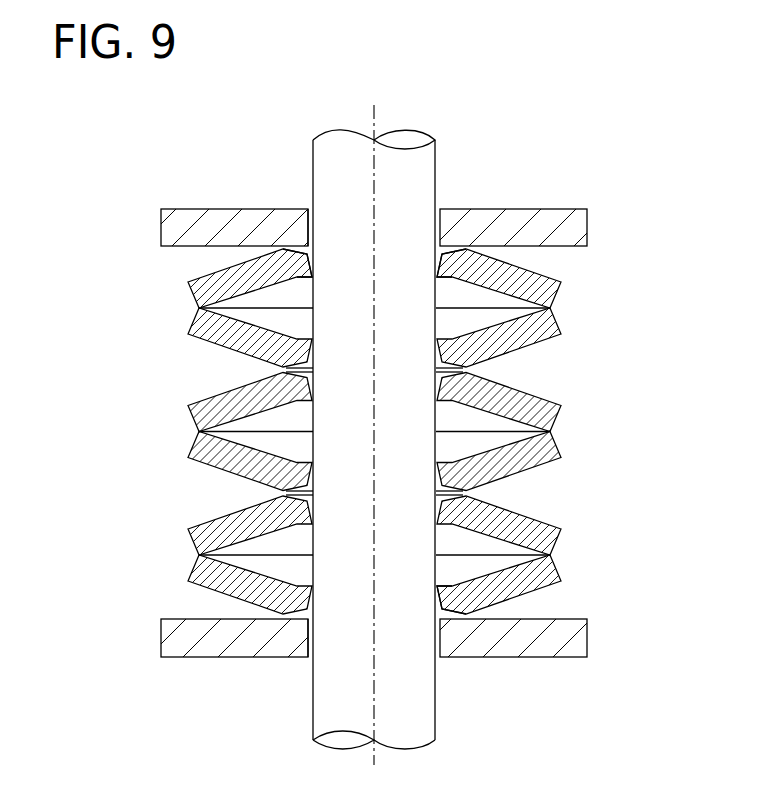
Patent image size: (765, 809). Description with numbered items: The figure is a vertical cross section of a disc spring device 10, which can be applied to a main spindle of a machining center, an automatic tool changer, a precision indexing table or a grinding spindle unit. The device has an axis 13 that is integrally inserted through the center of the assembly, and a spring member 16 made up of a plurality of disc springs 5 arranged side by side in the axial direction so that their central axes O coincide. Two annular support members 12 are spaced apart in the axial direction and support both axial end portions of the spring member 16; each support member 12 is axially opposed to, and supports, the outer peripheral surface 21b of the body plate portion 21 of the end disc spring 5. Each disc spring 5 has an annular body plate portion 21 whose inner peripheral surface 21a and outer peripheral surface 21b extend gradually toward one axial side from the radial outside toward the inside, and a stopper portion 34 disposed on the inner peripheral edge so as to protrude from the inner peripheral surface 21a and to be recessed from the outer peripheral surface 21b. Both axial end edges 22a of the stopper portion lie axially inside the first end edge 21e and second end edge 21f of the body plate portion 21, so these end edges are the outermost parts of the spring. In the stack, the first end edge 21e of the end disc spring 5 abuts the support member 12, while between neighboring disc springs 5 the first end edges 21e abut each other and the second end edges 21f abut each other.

The disc spring 5 is at (379, 380).
The disc spring device 10 is at (630, 128).
The support member 12 is at (565, 209).
The axis 13 is at (437, 150).
The spring member 16 is at (379, 422).
The body plate portion 21 is at (502, 262).
The inner peripheral surface 21a is at (485, 448).
The outer peripheral surface 21b is at (521, 512).
The first end edge 21e is at (290, 251).
The second end edge 21f is at (552, 308).
The axial end edge of the stopper portion 22a is at (303, 252).
The stopper portion 34 is at (452, 250).
The central axis O is at (374, 108).